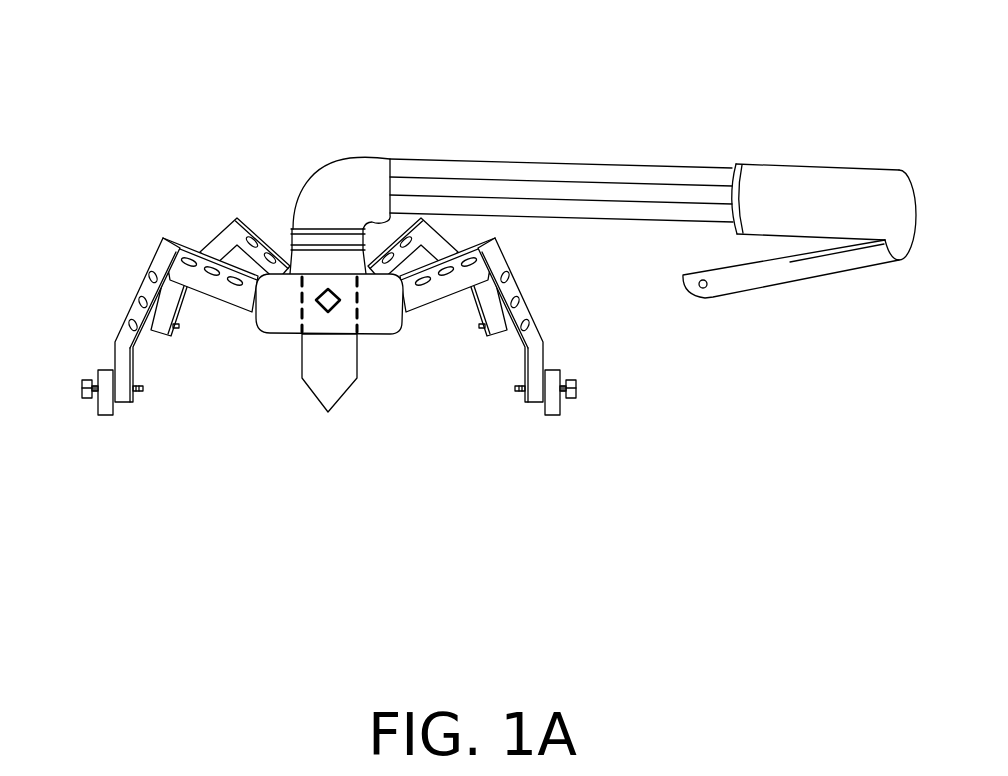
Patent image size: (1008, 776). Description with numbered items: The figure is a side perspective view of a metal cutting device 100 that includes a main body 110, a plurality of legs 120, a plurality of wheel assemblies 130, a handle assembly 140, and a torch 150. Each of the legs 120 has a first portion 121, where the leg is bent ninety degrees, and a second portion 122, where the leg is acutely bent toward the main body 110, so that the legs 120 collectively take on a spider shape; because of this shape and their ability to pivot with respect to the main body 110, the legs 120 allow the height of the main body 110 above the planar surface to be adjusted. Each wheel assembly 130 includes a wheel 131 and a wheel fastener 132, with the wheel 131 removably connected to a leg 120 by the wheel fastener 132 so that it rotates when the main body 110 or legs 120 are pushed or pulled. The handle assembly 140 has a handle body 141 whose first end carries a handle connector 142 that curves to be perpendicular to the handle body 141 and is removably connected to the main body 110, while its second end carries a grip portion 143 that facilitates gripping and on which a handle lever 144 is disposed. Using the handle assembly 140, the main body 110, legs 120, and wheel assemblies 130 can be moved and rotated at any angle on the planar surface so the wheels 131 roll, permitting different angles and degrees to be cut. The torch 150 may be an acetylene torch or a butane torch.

The metal cutting device 100 is at (148, 82).
The main body 110 is at (384, 331).
The plurality of legs 120 is at (312, 262).
The first portion 121 is at (165, 236).
The second portion 122 is at (115, 336).
The plurality of wheel assemblies 130 is at (325, 418).
The wheel 131 is at (105, 416).
The wheel fastener 132 is at (80, 387).
The handle assembly 140 is at (603, 224).
The handle body 141 is at (428, 157).
The handle connector 142 is at (322, 166).
The grip portion 143 is at (831, 164).
The handle lever 144 is at (808, 272).
The torch 150 is at (308, 368).